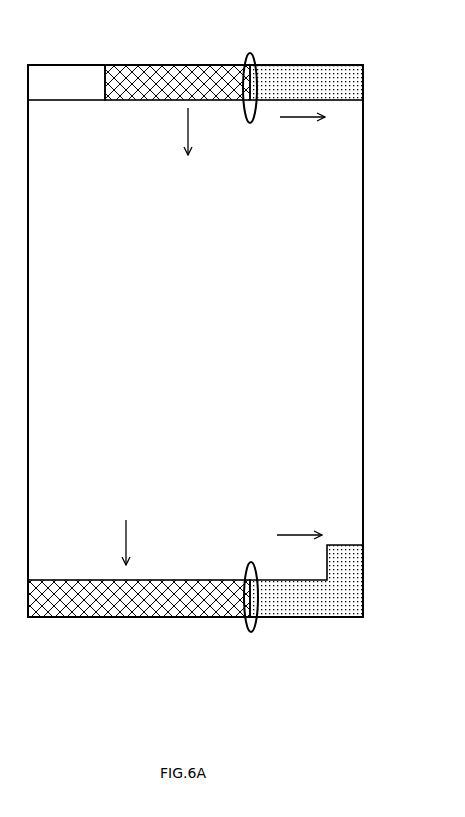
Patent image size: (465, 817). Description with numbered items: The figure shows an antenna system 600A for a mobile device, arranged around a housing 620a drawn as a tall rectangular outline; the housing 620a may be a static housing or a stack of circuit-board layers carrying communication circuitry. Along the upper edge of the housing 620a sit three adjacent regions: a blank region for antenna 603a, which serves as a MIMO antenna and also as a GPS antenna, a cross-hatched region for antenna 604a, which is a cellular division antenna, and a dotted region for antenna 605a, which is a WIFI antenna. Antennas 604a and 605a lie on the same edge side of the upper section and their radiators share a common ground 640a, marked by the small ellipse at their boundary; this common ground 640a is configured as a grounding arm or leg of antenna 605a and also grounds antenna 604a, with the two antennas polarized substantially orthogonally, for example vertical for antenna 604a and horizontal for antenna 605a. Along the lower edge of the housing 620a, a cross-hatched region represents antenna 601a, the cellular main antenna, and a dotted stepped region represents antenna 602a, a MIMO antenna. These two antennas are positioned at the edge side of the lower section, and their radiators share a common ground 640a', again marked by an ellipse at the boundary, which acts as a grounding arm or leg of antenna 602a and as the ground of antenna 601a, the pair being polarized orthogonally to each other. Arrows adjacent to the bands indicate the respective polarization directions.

The antenna system 600A is at (55, 46).
The antenna 601a is at (72, 605).
The antenna 602a is at (308, 597).
The antenna 603a is at (48, 80).
The antenna 604a is at (155, 80).
The antenna 605a is at (287, 85).
The housing 620a is at (350, 340).
The common ground 640a is at (223, 128).
The common ground 640a' is at (243, 573).